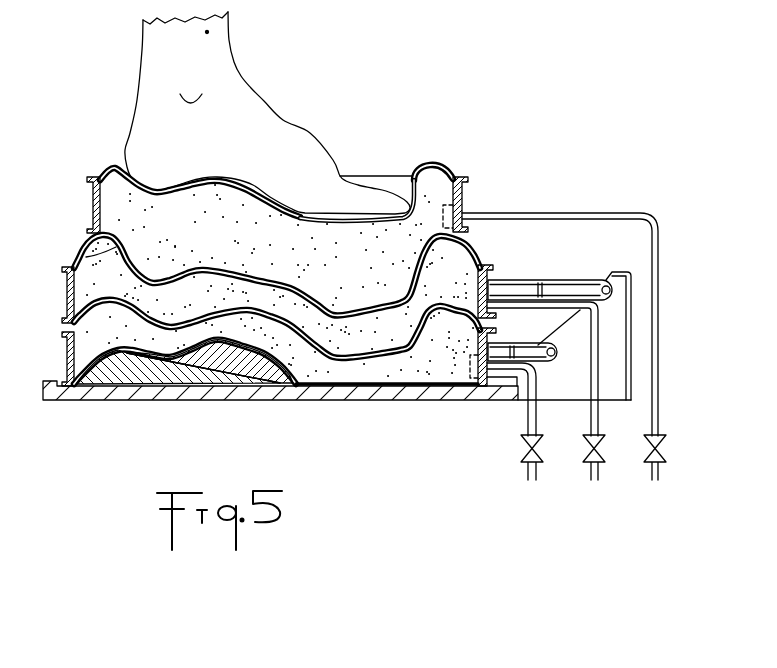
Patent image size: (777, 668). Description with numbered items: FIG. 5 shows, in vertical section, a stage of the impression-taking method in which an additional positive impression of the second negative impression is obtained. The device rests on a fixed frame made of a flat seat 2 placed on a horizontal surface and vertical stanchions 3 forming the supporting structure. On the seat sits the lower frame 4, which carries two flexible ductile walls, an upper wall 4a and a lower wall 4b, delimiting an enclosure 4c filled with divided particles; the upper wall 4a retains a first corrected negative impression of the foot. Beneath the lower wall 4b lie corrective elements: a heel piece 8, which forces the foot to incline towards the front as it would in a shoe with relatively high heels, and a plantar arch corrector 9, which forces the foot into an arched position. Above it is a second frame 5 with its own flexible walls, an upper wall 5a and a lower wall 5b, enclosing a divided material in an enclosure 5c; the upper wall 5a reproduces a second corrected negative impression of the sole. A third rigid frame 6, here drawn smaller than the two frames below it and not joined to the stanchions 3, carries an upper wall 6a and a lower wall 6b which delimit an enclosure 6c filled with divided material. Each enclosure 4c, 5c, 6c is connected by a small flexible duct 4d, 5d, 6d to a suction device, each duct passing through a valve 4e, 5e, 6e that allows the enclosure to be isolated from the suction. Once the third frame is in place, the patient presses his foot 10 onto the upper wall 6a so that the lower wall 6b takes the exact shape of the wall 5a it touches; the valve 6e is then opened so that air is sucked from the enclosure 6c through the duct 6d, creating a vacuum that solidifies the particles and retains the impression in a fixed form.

The flat seat 2 is at (417, 393).
The vertical stanchion 3 is at (603, 302).
The lower frame 4 is at (68, 358).
The upper wall 4a is at (432, 352).
The lower wall 4b is at (291, 386).
The enclosure 4c is at (361, 373).
The flexible duct 4d is at (535, 433).
The valve 4e is at (548, 451).
The second frame 5 is at (68, 298).
The upper wall 5a is at (464, 243).
The lower wall 5b is at (491, 285).
The enclosure 5c is at (357, 327).
The flexible duct 5d is at (598, 423).
The valve 5e is at (608, 451).
The third rigid frame 6 is at (88, 199).
The upper wall 6a is at (113, 167).
The lower wall 6b is at (85, 253).
The enclosure 6c is at (320, 215).
The flexible duct 6d is at (607, 212).
The valve 6e is at (668, 451).
The heel piece 8 is at (140, 372).
The plantar arch corrector 9 is at (238, 365).
The foot 10 is at (285, 143).